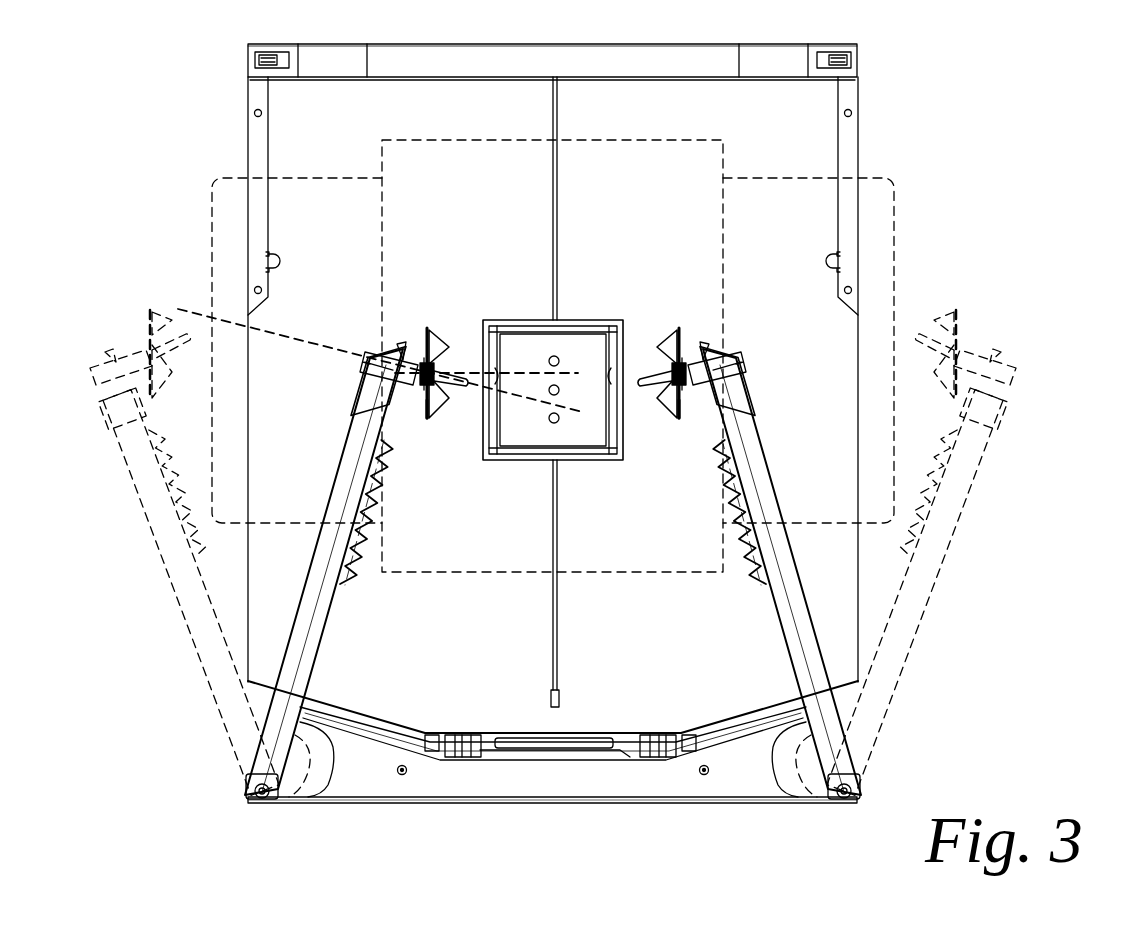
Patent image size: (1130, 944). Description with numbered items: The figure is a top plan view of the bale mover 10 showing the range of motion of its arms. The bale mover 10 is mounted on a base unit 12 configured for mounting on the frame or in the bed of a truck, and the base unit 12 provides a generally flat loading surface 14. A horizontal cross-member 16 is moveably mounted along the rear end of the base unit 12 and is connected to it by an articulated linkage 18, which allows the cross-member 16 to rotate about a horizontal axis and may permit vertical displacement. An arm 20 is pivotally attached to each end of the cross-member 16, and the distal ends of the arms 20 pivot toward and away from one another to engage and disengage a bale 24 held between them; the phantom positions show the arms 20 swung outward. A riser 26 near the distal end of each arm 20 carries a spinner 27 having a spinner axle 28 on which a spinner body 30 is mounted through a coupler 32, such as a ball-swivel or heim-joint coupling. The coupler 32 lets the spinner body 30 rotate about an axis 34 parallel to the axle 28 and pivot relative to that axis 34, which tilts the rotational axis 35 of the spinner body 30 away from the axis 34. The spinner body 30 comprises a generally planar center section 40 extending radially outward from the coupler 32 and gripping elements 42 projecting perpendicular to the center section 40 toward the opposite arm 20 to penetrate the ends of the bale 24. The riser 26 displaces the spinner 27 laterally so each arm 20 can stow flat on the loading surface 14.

The bale mover 10 is at (972, 712).
The base unit 12 is at (247, 624).
The loading surface 14 is at (857, 632).
The cross-member 16 is at (600, 804).
The articulated linkage 18 is at (455, 792).
The arm 20 is at (328, 624).
The bale 24 is at (228, 178).
The riser 26 is at (360, 394).
The spinner 27 is at (500, 325).
The spinner axle 28 is at (470, 386).
The spinner body 30 is at (420, 423).
The coupler 32 is at (448, 346).
The axis 34 is at (215, 300).
The rotational axis 35 is at (562, 358).
The center section 40 is at (412, 360).
The gripping elements 42 is at (427, 330).